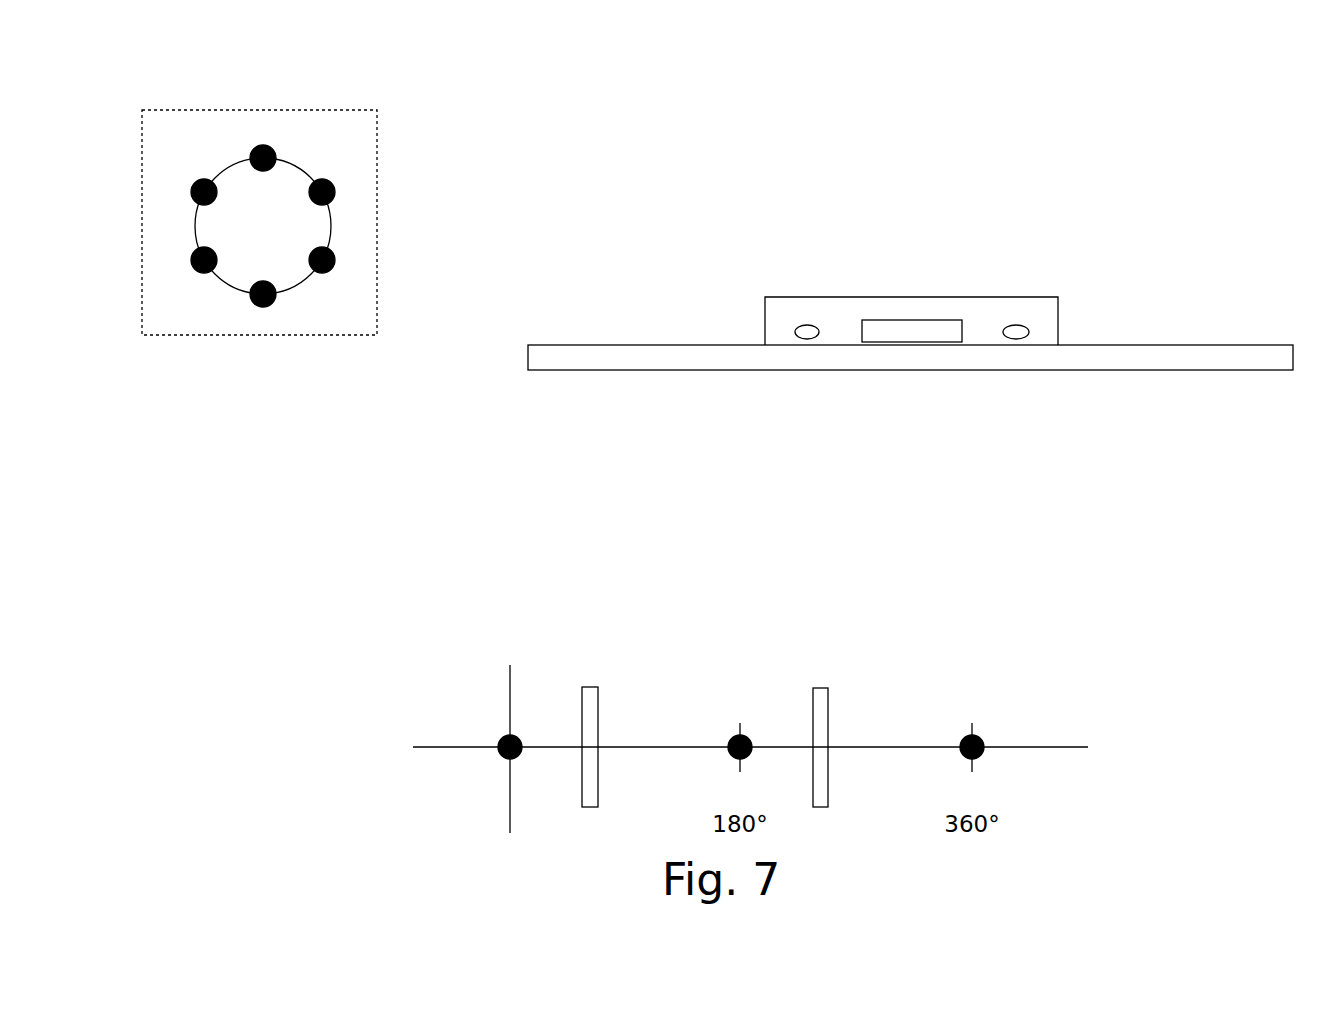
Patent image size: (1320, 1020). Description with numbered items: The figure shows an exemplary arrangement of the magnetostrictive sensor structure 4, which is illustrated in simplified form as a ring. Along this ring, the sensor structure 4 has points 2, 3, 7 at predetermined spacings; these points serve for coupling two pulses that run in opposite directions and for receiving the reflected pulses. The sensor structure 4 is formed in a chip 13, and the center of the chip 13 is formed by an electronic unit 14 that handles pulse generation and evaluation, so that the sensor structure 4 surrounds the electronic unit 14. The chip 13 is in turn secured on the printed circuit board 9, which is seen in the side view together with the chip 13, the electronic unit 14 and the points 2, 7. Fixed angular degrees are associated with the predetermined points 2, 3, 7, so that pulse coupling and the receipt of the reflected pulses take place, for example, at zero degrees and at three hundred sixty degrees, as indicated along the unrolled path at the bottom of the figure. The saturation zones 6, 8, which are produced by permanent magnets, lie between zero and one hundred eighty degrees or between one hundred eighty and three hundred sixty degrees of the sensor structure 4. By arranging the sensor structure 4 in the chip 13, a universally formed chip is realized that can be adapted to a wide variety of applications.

The point 2 is at (264, 145).
The point 3 is at (978, 737).
The magnetostrictive sensor structure 4 is at (198, 110).
The saturation zone 6 is at (818, 688).
The point 7 is at (263, 308).
The saturation zone 8 is at (592, 687).
The printed circuit board 9 is at (565, 358).
The chip 13 is at (325, 158).
The electronic unit 14 is at (912, 318).